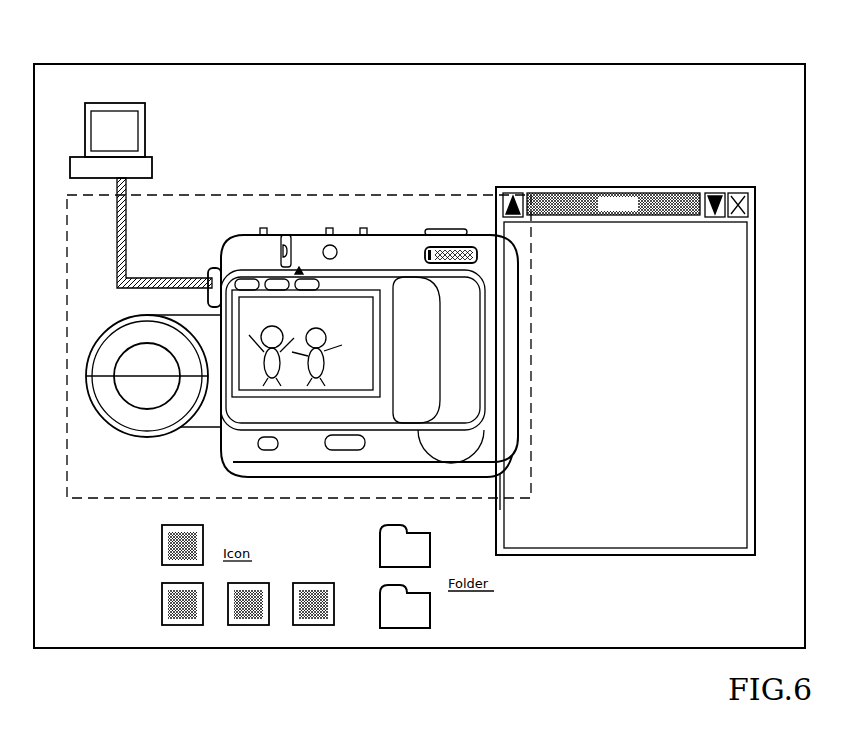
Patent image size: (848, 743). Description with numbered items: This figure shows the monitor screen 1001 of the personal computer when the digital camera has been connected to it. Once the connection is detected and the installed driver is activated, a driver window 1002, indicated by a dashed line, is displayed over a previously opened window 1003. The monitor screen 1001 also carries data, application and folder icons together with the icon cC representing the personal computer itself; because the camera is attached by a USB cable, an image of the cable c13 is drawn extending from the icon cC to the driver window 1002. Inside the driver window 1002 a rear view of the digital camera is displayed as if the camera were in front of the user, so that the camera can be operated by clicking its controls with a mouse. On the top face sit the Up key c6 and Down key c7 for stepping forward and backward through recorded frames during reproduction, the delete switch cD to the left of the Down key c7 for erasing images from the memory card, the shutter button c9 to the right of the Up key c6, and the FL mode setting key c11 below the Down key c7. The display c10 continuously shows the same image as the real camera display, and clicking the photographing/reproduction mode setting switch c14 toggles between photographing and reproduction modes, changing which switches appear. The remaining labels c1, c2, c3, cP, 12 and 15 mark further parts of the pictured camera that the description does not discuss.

The monitor screen 1001 is at (458, 106).
The driver window 1002 is at (353, 181).
The previously opened window 1003 is at (611, 171).
The camera image area c1 is at (290, 190).
The camera body c2 is at (410, 221).
The lens c3 is at (133, 307).
The icon representing the personal computer cC is at (119, 140).
The delete switch cD is at (257, 223).
The Down key c7 is at (327, 235).
The Up key c6 is at (359, 223).
The shutter button c9 is at (451, 237).
The FL mode setting key c11 is at (270, 251).
The pointer cP is at (302, 263).
The cable c13 is at (169, 242).
The photographing/reproduction mode setting switch c14 is at (450, 364).
The display c10 is at (306, 338).
The operation buttons 12 is at (297, 443).
The camera base 15 is at (366, 384).